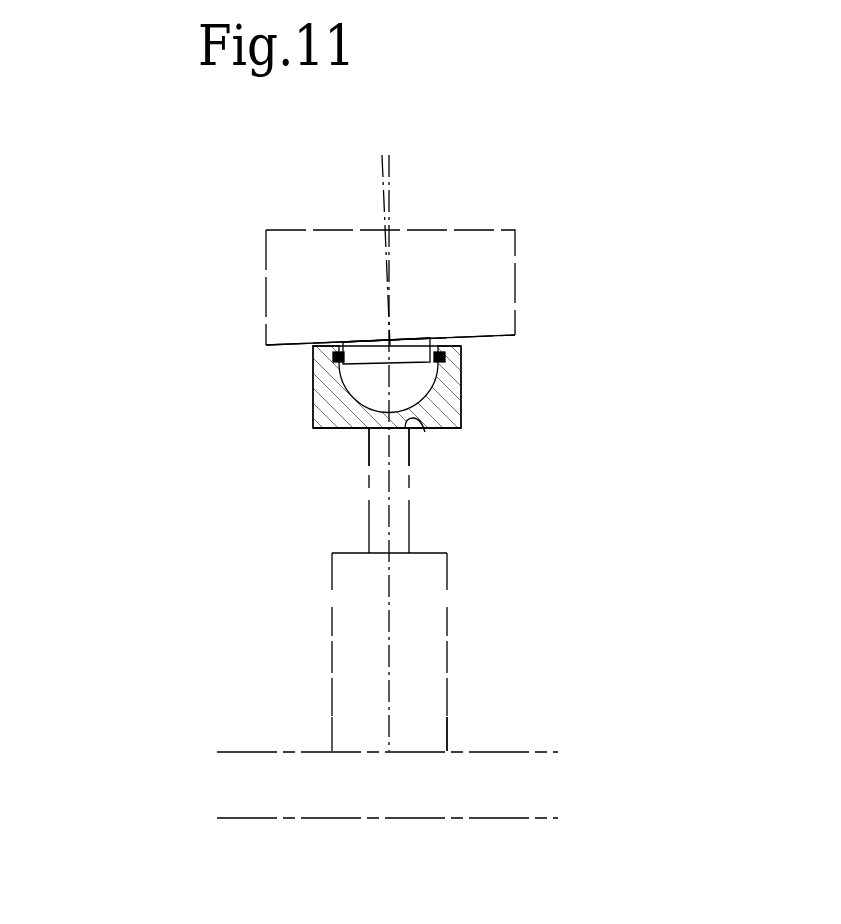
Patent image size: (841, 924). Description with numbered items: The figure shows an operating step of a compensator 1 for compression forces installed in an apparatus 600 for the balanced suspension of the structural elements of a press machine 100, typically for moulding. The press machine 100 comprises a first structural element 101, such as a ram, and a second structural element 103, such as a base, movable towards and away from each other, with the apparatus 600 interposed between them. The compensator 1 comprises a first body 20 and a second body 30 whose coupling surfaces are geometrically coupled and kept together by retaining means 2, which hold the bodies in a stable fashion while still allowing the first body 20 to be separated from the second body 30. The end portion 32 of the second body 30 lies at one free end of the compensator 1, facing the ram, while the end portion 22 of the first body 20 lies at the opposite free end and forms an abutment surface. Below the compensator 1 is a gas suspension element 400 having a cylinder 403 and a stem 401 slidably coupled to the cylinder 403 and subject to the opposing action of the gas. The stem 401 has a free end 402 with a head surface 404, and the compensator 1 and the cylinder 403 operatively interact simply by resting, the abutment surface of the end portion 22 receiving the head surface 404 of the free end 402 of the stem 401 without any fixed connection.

The compensator 1 is at (507, 440).
The retaining means 2 is at (322, 367).
The first body 20 is at (317, 435).
The end portion 22 is at (445, 430).
The second body 30 is at (415, 327).
The end portion 32 is at (366, 340).
The press machine 100 is at (250, 237).
The structural element 101 is at (490, 336).
The structural element 103 is at (518, 791).
The gas suspension element 400 is at (308, 593).
The stem 401 is at (425, 432).
The free end 402 is at (362, 436).
The cylinder 403 is at (448, 731).
The head surface 404 is at (409, 502).
The apparatus 600 is at (278, 690).